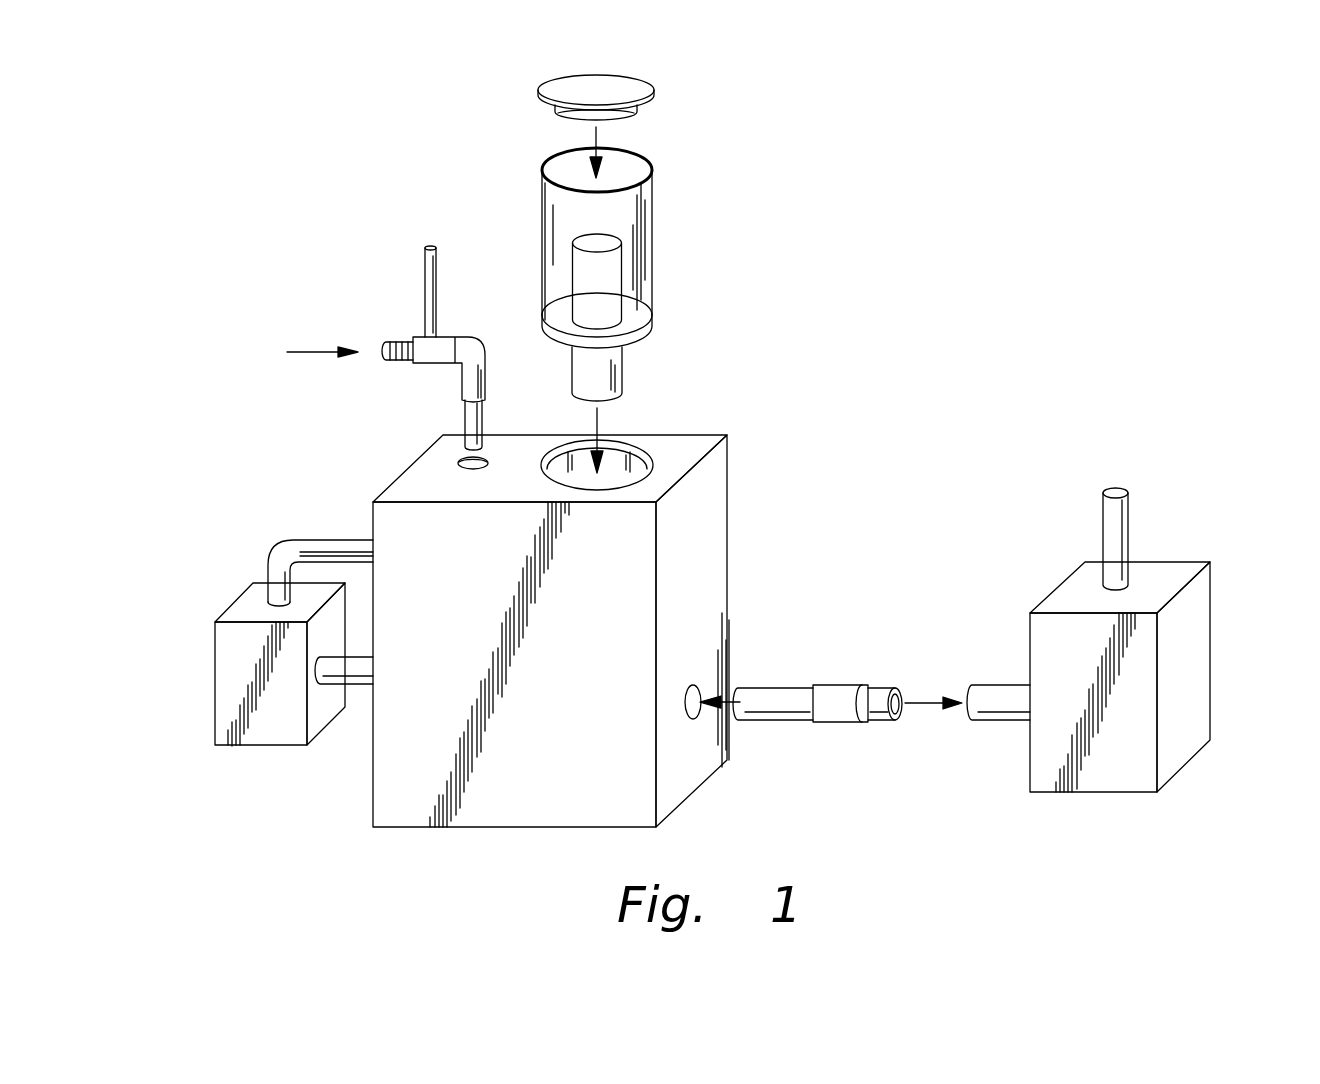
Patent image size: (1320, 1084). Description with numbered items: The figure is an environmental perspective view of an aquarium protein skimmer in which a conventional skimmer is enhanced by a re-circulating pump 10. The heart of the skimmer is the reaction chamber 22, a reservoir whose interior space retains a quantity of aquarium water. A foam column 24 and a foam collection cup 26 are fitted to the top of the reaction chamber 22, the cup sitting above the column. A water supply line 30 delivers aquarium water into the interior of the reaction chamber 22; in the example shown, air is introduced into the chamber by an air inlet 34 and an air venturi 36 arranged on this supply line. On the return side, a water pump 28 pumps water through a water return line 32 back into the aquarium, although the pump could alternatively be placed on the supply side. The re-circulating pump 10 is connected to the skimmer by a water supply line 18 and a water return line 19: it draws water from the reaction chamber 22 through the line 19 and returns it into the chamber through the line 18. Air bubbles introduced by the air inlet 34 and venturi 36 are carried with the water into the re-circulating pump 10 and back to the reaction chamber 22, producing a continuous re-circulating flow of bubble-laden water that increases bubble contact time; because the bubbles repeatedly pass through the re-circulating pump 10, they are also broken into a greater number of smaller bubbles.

The re-circulating pump 10 is at (215, 650).
The water supply line 18 is at (367, 690).
The water return line 19 is at (290, 540).
The reaction chamber 22 is at (728, 515).
The foam column 24 is at (622, 377).
The foam collection cup 26 is at (653, 240).
The water pump 28 is at (1213, 632).
The water supply line 30 is at (463, 398).
The water return line 32 is at (838, 683).
The air inlet 34 is at (425, 283).
The air venturi 36 is at (427, 363).